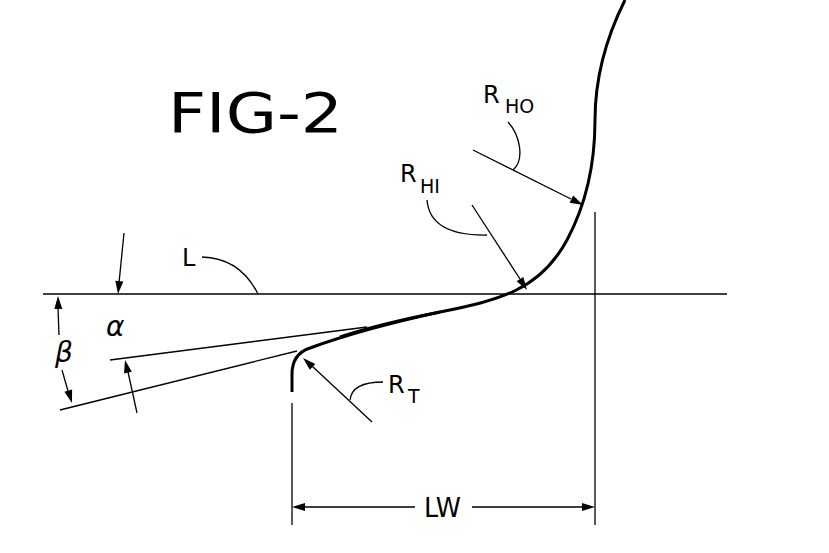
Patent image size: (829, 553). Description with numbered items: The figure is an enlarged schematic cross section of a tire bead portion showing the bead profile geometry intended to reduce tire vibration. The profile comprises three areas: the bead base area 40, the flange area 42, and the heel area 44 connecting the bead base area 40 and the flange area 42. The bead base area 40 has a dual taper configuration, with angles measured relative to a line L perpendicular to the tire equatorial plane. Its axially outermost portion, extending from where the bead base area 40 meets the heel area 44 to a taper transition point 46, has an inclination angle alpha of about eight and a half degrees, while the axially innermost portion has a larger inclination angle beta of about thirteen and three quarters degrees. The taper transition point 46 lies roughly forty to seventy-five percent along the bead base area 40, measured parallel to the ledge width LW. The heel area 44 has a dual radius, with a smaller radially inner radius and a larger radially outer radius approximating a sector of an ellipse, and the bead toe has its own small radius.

The bead base area 40 is at (413, 337).
The flange area 42 is at (618, 33).
The heel area 44 is at (573, 253).
The taper transition point 46 is at (417, 318).